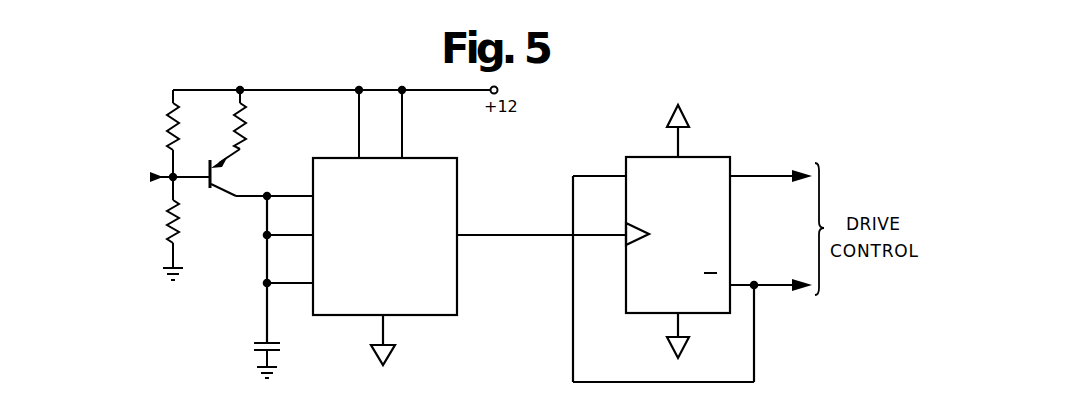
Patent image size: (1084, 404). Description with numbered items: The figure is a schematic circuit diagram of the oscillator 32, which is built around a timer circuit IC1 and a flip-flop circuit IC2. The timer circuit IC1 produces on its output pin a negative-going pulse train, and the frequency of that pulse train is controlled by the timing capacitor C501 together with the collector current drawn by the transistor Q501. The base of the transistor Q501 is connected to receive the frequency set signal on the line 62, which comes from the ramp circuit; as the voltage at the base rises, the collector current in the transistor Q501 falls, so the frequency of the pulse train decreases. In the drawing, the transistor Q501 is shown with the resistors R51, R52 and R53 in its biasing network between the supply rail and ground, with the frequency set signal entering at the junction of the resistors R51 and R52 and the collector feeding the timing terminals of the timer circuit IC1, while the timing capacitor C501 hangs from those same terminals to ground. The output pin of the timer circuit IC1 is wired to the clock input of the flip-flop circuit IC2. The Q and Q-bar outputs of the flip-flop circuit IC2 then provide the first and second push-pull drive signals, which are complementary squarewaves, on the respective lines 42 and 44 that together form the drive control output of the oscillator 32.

The line 62 is at (172, 174).
The oscillator 32 is at (692, 243).
The line 42 is at (753, 176).
The line 44 is at (764, 285).
The timer circuit IC1 is at (426, 158).
The flip-flop circuit IC2 is at (705, 157).
The resistor 13k R51 is at (189, 133).
The resistor 560k R52 is at (192, 228).
The resistor 10k R53 is at (256, 119).
The transistor Q501 is at (225, 174).
The timing capacitor C501 is at (291, 360).